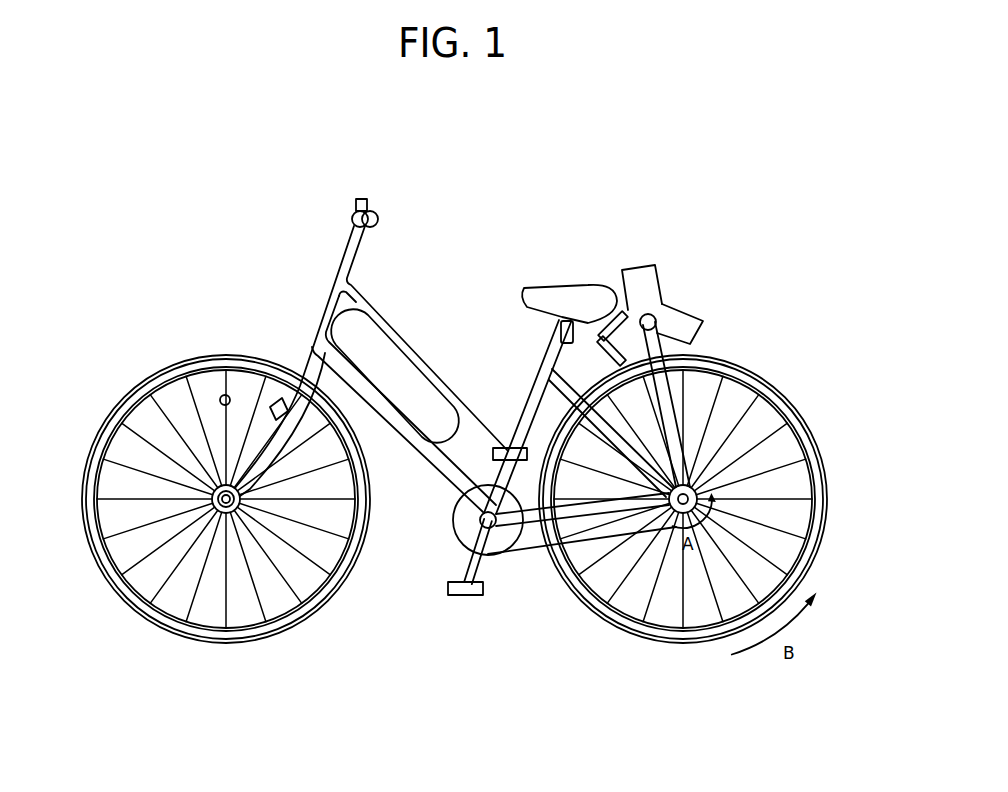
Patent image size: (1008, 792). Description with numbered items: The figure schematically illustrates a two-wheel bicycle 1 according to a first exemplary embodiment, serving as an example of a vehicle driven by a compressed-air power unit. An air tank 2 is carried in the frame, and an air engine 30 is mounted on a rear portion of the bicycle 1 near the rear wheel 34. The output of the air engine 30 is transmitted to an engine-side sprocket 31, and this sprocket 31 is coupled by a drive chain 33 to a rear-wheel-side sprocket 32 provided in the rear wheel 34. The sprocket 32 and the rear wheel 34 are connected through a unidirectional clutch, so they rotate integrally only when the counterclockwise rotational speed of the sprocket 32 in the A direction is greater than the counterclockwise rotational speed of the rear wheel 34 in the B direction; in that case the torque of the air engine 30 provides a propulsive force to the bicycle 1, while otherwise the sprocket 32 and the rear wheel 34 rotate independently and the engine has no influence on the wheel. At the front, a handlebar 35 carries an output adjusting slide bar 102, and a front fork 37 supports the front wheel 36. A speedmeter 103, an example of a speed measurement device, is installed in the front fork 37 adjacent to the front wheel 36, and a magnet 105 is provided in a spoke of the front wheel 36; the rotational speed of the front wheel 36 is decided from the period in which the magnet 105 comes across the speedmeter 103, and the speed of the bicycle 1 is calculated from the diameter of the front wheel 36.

The bicycle 1 is at (305, 263).
The air tank 2 is at (368, 352).
The air engine 30 is at (641, 292).
The sprocket 31 is at (656, 320).
The sprocket 32 is at (700, 493).
The drive chain 33 is at (675, 386).
The rear wheel 34 is at (805, 563).
The handlebar 35 is at (376, 213).
The front wheel 36 is at (105, 425).
The front fork 37 is at (303, 372).
The output adjusting slide bar 102 is at (366, 199).
The speedmeter 103 is at (272, 398).
The magnet 105 is at (220, 395).